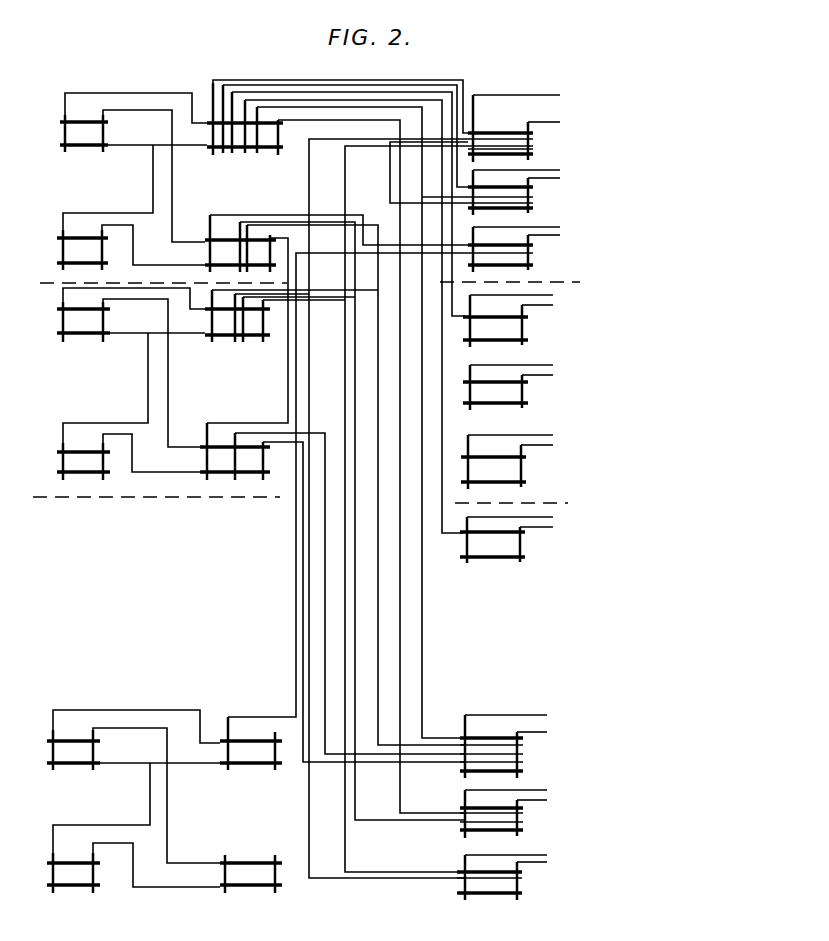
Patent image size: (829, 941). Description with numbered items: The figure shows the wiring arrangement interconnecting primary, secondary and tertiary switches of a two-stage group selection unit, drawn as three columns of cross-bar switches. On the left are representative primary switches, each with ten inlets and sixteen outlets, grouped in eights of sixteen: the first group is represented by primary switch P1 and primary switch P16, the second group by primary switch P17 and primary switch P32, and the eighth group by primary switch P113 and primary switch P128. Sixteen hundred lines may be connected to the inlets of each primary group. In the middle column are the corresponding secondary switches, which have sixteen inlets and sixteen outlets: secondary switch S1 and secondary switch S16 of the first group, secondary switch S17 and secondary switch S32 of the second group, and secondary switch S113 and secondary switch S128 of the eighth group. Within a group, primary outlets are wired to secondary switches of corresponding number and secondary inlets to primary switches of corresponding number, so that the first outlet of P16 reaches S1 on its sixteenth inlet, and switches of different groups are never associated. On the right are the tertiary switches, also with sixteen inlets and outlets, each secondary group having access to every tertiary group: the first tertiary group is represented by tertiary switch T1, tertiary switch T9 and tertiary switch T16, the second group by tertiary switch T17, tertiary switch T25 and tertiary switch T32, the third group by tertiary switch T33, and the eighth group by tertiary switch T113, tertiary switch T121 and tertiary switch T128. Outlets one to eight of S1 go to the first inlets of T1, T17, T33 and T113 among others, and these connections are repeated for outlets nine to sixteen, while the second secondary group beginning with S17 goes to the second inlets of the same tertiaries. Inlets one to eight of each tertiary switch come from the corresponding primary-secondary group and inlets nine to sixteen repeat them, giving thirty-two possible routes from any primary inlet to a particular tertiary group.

The primary switch P1 is at (92, 140).
The primary switch P16 is at (90, 257).
The primary switch P17 is at (91, 328).
The primary switch P32 is at (91, 468).
The primary switch P113 is at (85, 757).
The primary switch P128 is at (84, 880).
The secondary switch S1 is at (254, 125).
The secondary switch S16 is at (255, 257).
The secondary switch S17 is at (252, 323).
The secondary switch S32 is at (245, 461).
The secondary switch S113 is at (259, 751).
The secondary switch S128 is at (260, 881).
The tertiary switch T1 is at (570, 133).
The tertiary switch T9 is at (546, 192).
The tertiary switch T16 is at (550, 252).
The tertiary switch T17 is at (538, 323).
The tertiary switch T25 is at (538, 390).
The tertiary switch T32 is at (541, 464).
The tertiary switch T33 is at (537, 543).
The tertiary switch T113 is at (566, 750).
The tertiary switch T121 is at (540, 818).
The tertiary switch T128 is at (543, 882).